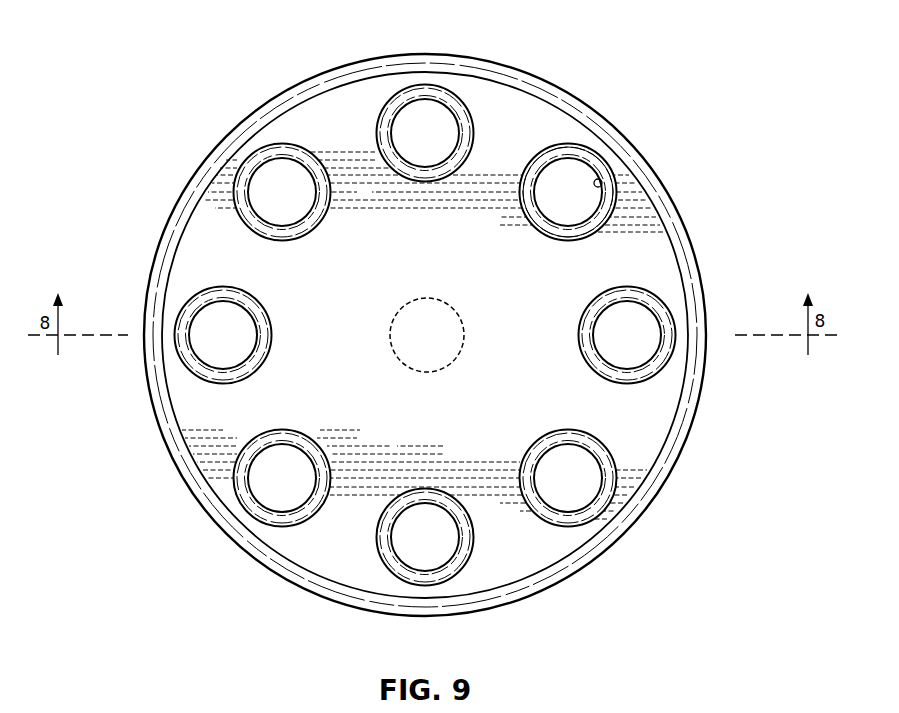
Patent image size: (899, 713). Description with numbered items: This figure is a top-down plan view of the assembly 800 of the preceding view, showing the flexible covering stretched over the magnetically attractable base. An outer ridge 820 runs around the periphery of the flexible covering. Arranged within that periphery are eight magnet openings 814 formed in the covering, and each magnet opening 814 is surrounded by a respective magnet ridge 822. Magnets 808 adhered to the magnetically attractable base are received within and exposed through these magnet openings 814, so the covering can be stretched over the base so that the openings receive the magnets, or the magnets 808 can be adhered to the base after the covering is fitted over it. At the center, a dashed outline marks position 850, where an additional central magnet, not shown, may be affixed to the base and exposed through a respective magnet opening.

The tool assembly / fixture 800 is at (118, 194).
The magnets 808 is at (650, 335).
The magnet openings 814 is at (602, 183).
The outer ridge 820 is at (648, 162).
The magnet ridges 822 is at (286, 142).
The position 850 is at (460, 325).